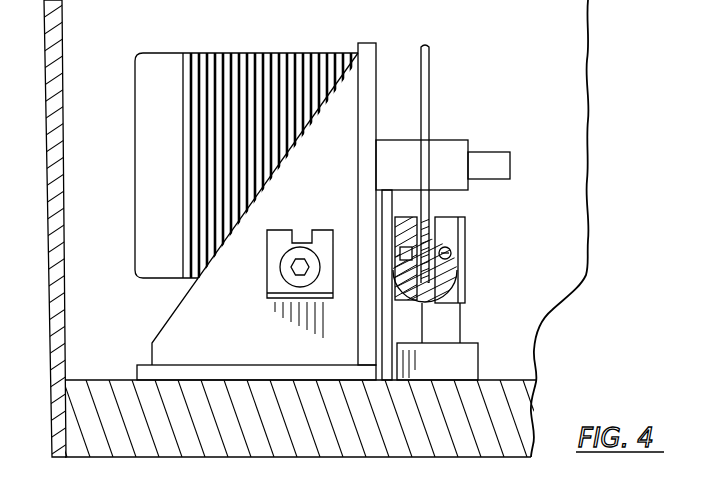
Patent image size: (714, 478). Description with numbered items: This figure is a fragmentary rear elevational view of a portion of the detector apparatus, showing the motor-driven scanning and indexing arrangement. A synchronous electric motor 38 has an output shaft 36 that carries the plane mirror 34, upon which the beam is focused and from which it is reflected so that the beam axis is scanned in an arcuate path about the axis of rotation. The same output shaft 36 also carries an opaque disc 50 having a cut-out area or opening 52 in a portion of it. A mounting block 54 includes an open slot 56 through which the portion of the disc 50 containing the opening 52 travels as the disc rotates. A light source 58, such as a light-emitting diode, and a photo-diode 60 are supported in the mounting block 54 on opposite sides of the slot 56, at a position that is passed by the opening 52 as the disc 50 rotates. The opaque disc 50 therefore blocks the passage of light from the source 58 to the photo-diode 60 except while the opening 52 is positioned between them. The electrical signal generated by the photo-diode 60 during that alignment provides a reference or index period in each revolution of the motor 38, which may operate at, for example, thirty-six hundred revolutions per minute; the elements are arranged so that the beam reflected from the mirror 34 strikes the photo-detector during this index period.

The plane mirror 34 is at (510, 152).
The output shaft 36 is at (455, 140).
The synchronous electric motor 38 is at (222, 66).
The opaque disc 50 is at (432, 62).
The opening 52 is at (434, 262).
The mounting block 54 is at (445, 318).
The open slot 56 is at (444, 217).
The light source 58 is at (452, 253).
The photo-diode 60 is at (405, 228).